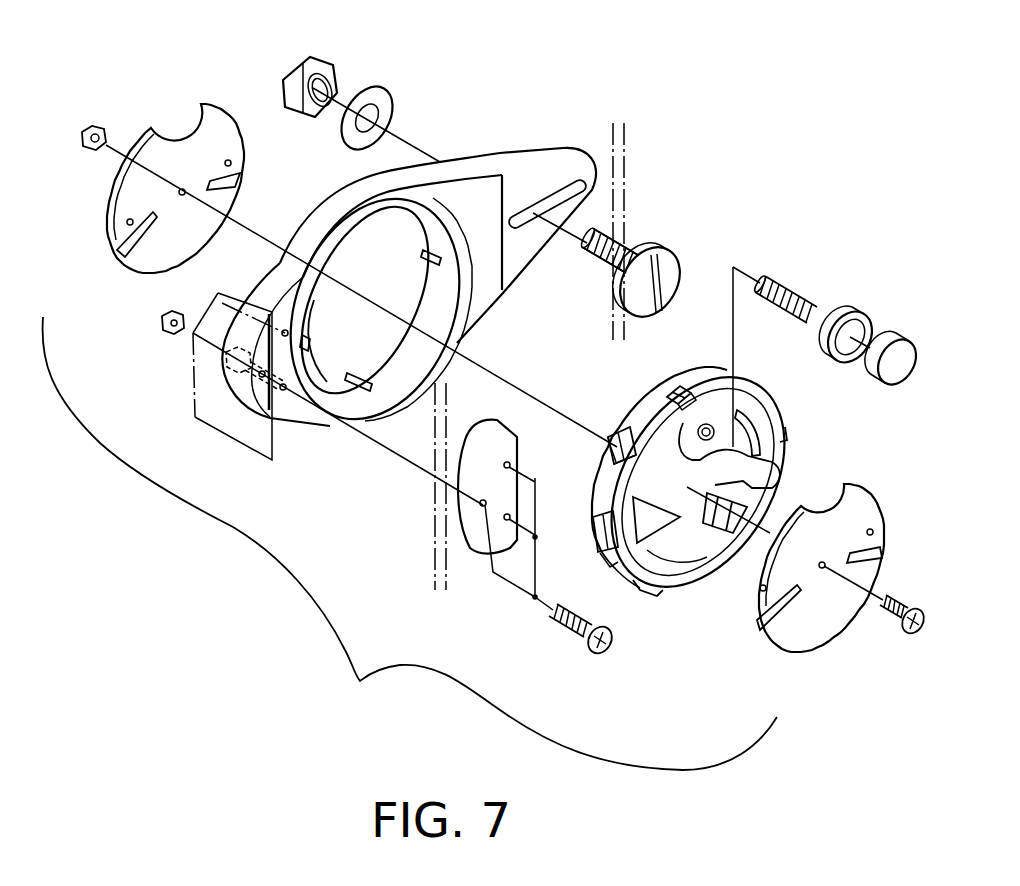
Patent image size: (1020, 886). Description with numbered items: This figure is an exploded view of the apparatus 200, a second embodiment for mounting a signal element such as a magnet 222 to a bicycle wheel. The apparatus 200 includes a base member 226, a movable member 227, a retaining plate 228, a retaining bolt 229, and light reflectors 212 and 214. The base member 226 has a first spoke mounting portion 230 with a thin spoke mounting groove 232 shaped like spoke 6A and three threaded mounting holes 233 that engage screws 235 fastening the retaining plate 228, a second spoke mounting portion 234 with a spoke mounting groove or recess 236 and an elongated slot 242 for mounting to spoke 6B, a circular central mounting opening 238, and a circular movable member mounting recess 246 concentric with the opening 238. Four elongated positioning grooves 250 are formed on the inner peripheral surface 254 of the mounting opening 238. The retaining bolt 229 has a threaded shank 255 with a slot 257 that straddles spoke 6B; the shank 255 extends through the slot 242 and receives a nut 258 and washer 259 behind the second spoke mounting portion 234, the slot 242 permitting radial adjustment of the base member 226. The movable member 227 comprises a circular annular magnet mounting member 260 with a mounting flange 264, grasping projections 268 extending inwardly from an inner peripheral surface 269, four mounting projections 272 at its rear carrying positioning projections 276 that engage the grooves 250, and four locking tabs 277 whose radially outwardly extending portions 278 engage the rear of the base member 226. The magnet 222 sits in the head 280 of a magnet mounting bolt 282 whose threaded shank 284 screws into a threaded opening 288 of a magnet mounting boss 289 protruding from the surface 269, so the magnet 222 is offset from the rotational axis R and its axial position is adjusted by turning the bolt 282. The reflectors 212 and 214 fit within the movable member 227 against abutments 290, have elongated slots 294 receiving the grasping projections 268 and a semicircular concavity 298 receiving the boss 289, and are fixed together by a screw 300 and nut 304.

The apparatus 200 is at (410, 543).
The light reflector 212 is at (128, 200).
The light reflector 214 is at (877, 513).
The magnet 222 is at (903, 343).
The base member 226 is at (459, 140).
The movable member 227 is at (790, 413).
The retaining plate 228 is at (478, 553).
The retaining bolt 229 is at (670, 260).
The first spoke mounting portion 230 is at (250, 293).
The spoke mounting groove 232 is at (273, 420).
The threaded mounting hole 233 is at (288, 330).
The second spoke mounting portion 234 is at (552, 150).
The screw 235 is at (585, 634).
The spoke mounting groove or recess 236 is at (512, 183).
The central mounting opening 238 is at (400, 277).
The elongated slot 242 is at (580, 183).
The movable member mounting recess 246 is at (447, 317).
The positioning groove 250 is at (423, 256).
The inner peripheral surface 254 is at (330, 385).
The threaded shank 255 is at (593, 270).
The slot 257 is at (633, 257).
The nut 258 is at (304, 62).
The washer 259 is at (373, 83).
The magnet mounting member 260 is at (663, 593).
The mounting flange 264 is at (757, 397).
The grasping projection 268 is at (650, 520).
The inner peripheral surface 269 is at (690, 598).
The mounting projection 272 is at (650, 420).
The positioning projection 276 is at (673, 387).
The locking tab 277 is at (627, 460).
The radially outwardly extending portion 278 is at (610, 440).
The head 280 is at (850, 310).
The magnet mounting bolt 282 is at (823, 278).
The threaded shank 284 is at (793, 287).
The threaded opening 288 is at (706, 423).
The magnet mounting boss 289 is at (683, 405).
The abutment 290 is at (752, 428).
The elongated slot 294 is at (237, 173).
The semicircular concavity 298 is at (170, 140).
The screw 300 is at (900, 620).
The nut 304 is at (83, 130).
The spoke 6A is at (433, 518).
The spoke 6B is at (628, 143).
The rotational axis R is at (517, 385).